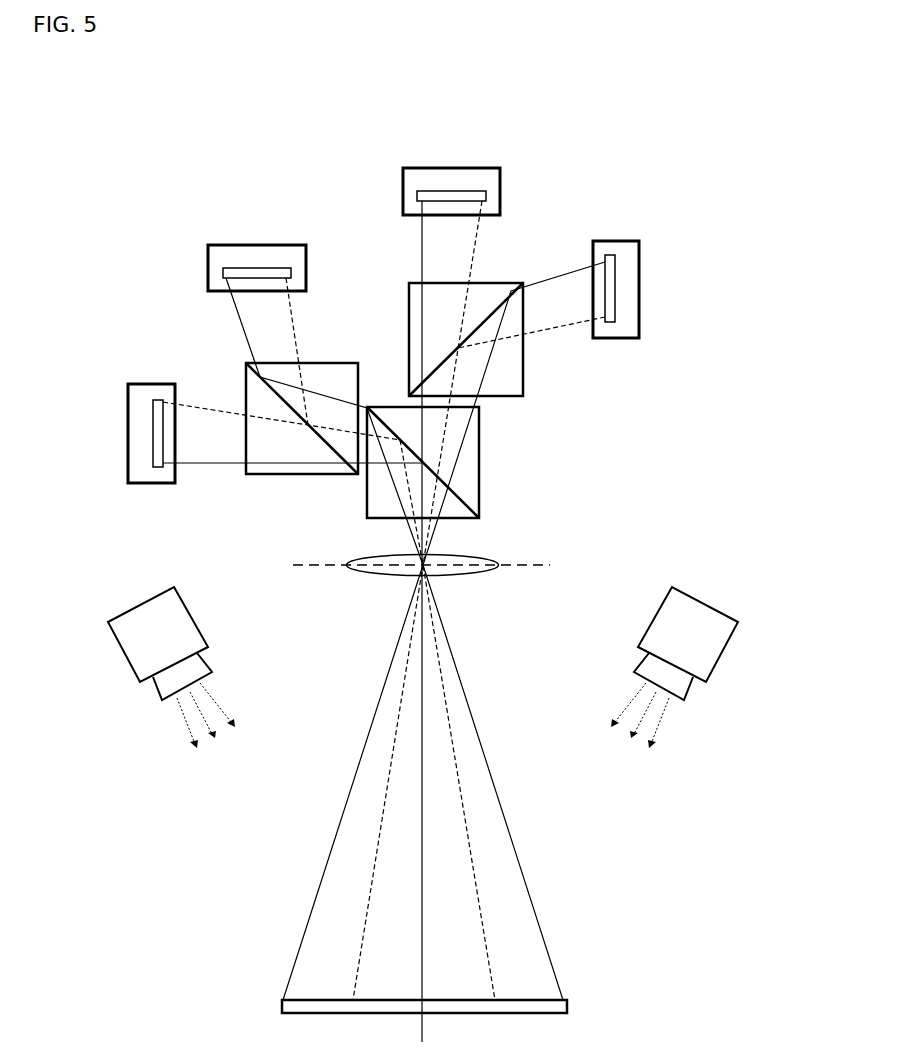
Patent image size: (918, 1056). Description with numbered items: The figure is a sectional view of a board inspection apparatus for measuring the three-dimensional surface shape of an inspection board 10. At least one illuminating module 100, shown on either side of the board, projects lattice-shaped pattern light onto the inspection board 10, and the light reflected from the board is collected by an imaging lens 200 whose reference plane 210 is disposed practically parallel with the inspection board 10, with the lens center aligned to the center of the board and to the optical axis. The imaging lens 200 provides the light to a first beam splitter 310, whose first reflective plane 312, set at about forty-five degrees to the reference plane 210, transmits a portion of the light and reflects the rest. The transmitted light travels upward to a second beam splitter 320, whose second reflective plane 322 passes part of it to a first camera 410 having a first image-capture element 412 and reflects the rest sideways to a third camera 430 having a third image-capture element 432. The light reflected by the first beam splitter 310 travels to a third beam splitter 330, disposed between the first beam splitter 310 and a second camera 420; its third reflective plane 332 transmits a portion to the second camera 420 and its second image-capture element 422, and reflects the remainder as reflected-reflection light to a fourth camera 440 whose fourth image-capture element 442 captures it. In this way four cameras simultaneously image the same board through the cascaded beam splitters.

The inspection board 10 is at (512, 1007).
The illuminating module 100 is at (214, 630).
The imaging lens 200 is at (450, 560).
The reference plane 210 is at (439, 565).
The first beam splitter 310 is at (467, 452).
The first reflective plane 312 is at (463, 500).
The second beam splitter 320 is at (437, 303).
The second reflective plane 322 is at (443, 358).
The third beam splitter 330 is at (273, 450).
The third reflective plane 332 is at (332, 455).
The first camera 410 is at (478, 178).
The first image-capture element 412 is at (428, 188).
The second camera 420 is at (146, 460).
The second image-capture element 422 is at (153, 420).
The third camera 430 is at (622, 313).
The third image-capture element 432 is at (615, 279).
The fourth camera 440 is at (283, 258).
The fourth image-capture element 442 is at (229, 260).